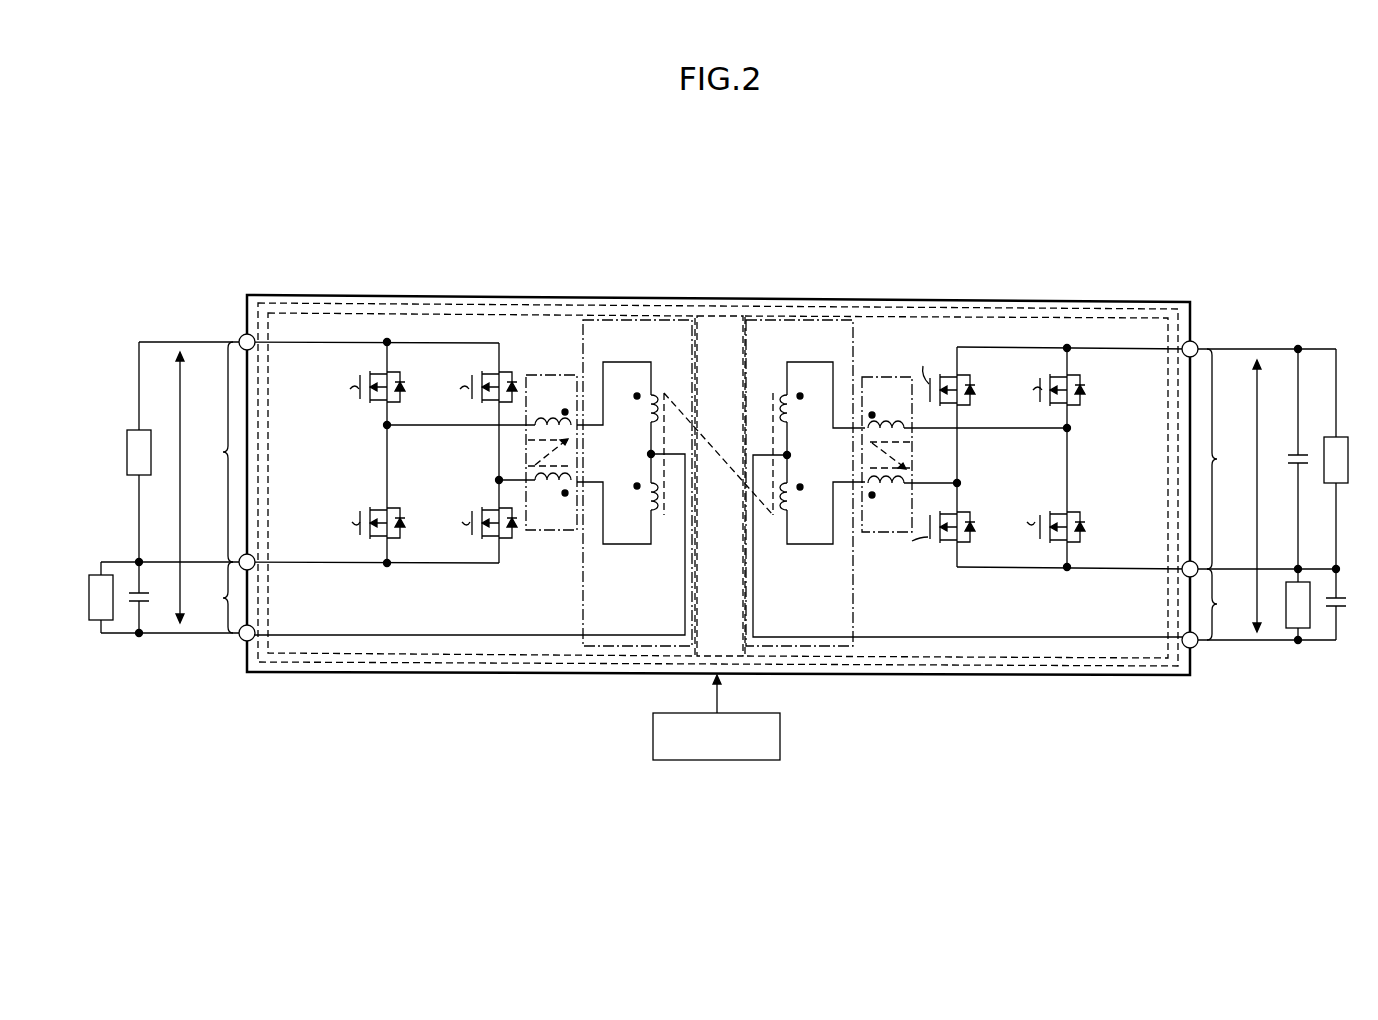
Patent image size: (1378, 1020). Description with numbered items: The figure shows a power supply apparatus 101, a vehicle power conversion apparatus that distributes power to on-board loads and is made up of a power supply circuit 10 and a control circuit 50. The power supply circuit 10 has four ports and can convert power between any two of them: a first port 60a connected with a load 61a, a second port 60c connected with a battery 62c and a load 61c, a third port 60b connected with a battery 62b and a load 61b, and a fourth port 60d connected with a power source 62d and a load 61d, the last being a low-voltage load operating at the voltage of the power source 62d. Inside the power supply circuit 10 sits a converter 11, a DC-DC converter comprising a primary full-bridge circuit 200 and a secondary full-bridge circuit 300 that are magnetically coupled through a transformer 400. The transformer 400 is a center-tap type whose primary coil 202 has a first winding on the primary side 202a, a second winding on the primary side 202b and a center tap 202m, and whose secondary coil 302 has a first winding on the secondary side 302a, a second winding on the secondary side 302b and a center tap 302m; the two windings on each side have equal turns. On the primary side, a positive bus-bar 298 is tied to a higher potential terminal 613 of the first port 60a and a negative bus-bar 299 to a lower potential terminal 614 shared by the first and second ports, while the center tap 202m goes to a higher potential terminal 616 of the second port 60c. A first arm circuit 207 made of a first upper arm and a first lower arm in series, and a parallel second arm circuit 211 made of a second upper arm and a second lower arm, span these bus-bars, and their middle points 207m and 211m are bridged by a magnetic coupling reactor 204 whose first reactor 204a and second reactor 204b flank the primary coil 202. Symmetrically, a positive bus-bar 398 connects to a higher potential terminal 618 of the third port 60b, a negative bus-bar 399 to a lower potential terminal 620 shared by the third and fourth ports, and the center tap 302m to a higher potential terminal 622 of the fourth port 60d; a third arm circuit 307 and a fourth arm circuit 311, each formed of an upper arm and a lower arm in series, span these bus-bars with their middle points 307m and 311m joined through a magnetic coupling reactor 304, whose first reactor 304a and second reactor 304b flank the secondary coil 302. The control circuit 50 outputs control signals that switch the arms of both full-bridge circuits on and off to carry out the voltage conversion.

The power supply apparatus 101 is at (227, 240).
The power supply circuit 10 is at (1083, 302).
The converter 11 is at (1034, 308).
The primary full-bridge circuit 200 is at (562, 314).
The secondary full-bridge circuit 300 is at (882, 318).
The transformer 400 is at (720, 318).
The primary coil 202 is at (469, 480).
The first winding on the primary side 202a is at (640, 396).
The second winding on the primary side 202b is at (645, 514).
The center tap 202m is at (649, 453).
The secondary coil 302 is at (968, 480).
The first winding on the secondary side 302a is at (795, 396).
The second winding on the secondary side 302b is at (788, 514).
The center tap 302m is at (792, 453).
The magnetic coupling reactor on the primary side 204 is at (548, 373).
The first reactor on the primary side 204a is at (555, 420).
The second reactor on the primary side 204b is at (552, 492).
The magnetic coupling reactor on the secondary side 304 is at (880, 375).
The first reactor on the secondary side 304a is at (880, 420).
The second reactor on the secondary side 304b is at (879, 494).
The first arm circuit 207 is at (372, 548).
The middle point of the first arm circuit 207m is at (380, 425).
The second arm circuit 211 is at (481, 548).
The middle point of the second arm circuit 211m is at (491, 480).
The third arm circuit 307 is at (1035, 548).
The middle point of the third arm circuit 307m is at (1072, 428).
The fourth arm circuit 311 is at (930, 548).
The middle point of the fourth arm circuit 311m is at (962, 483).
The positive bus-bar on the primary side 298 is at (343, 343).
The negative bus-bar on the primary side 299 is at (336, 565).
The positive bus-bar on the secondary side 398 is at (1128, 347).
The negative bus-bar on the secondary side 399 is at (1138, 568).
The higher potential terminal 613 is at (240, 336).
The lower potential terminal 614 is at (255, 556).
The higher potential terminal 616 is at (243, 642).
The higher potential terminal 618 is at (1198, 342).
The lower potential terminal 620 is at (1182, 562).
The higher potential terminal 622 is at (1193, 648).
The first port 60a is at (210, 452).
The third port 60b is at (1231, 459).
The second port 60c is at (214, 597).
The fourth port 60d is at (1230, 604).
The load 61a is at (139, 428).
The load 61b is at (1334, 435).
The load 61c is at (98, 623).
The load 61d is at (1295, 630).
The battery 62b is at (1296, 470).
The battery 62c is at (135, 590).
The power source 62d is at (1336, 610).
The control circuit 50 is at (782, 740).